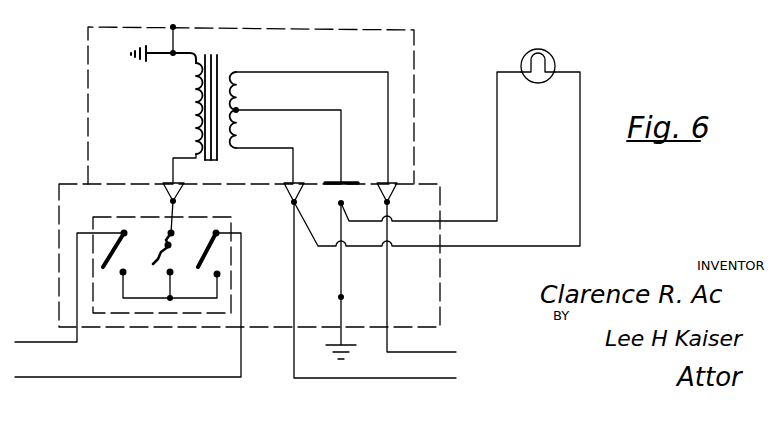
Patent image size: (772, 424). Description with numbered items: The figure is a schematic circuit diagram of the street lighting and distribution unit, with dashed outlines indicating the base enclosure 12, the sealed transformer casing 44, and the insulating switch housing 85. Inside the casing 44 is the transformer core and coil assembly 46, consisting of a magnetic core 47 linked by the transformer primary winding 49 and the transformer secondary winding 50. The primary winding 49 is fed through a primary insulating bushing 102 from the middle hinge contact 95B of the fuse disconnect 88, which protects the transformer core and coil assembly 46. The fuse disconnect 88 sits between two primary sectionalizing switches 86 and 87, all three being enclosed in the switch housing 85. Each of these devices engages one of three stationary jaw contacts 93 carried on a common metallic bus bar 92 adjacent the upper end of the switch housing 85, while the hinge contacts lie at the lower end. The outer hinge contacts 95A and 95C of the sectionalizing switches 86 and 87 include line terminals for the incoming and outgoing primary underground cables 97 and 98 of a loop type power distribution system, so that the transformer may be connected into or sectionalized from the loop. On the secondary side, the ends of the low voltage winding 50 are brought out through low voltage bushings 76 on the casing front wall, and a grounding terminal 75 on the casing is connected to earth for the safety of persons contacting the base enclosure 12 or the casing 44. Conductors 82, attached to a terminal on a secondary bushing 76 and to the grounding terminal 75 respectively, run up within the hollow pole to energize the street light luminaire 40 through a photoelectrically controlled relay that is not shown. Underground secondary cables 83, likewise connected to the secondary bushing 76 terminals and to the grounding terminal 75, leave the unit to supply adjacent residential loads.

The base enclosure 12 is at (59, 184).
The street light luminaire 40 is at (553, 53).
The transformer casing 44 is at (88, 60).
The transformer core and coil assembly 46 is at (227, 61).
The magnetic core 47 is at (212, 163).
The transformer primary winding 49 is at (192, 112).
The transformer secondary winding 50 is at (233, 88).
The grounding terminal 75 is at (340, 202).
The low voltage bushings 76 is at (285, 187).
The conductors 82 is at (557, 247).
The underground secondary cables 83 is at (293, 262).
The switch housing 85 is at (218, 313).
The primary sectionalizing switch 86 is at (117, 252).
The primary sectionalizing switch 87 is at (167, 254).
The fuse disconnect 88 is at (153, 264).
The bus bar 92 is at (192, 298).
The stationary jaw contacts 93 is at (123, 272).
The outer hinge contact 95A is at (124, 233).
The middle hinge contact 95B is at (172, 233).
The outer hinge contact 95C is at (217, 233).
The primary underground cable 97 is at (27, 342).
The primary underground cable 98 is at (118, 377).
The primary insulating bushing 102 is at (163, 185).